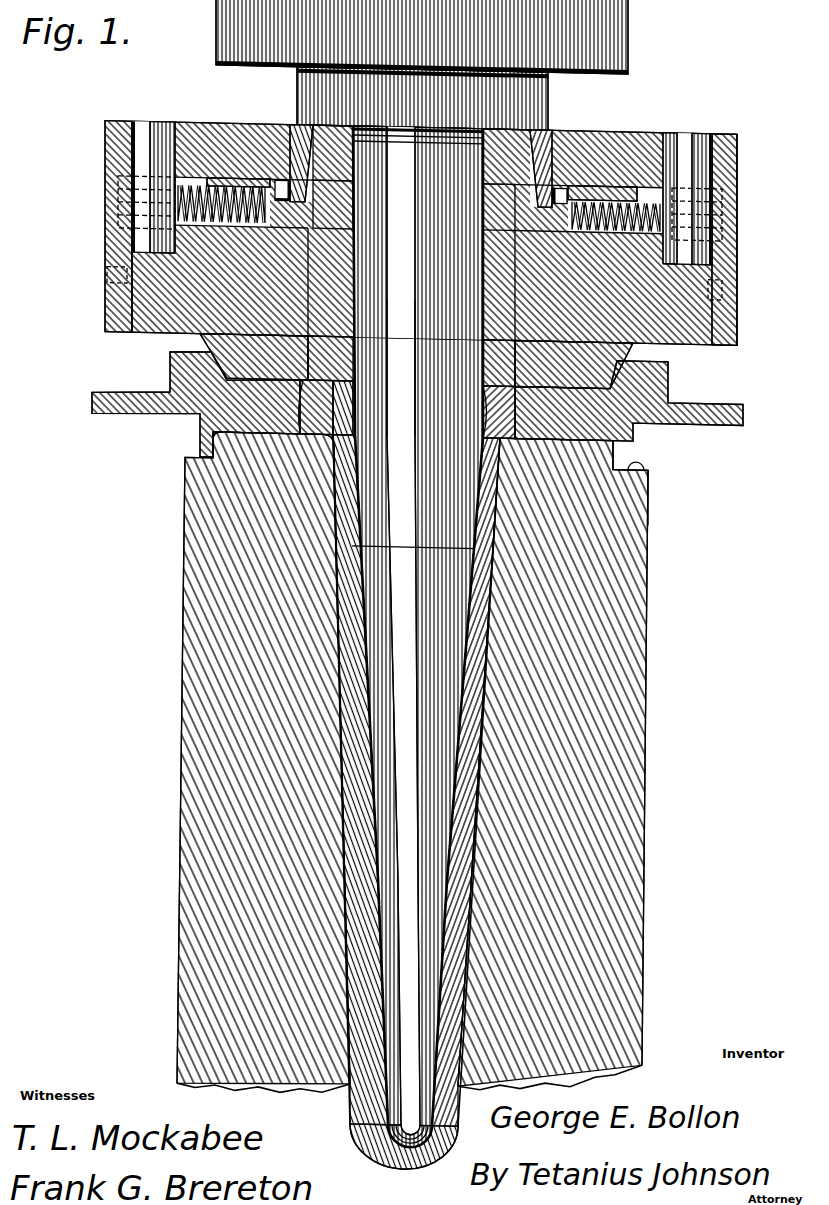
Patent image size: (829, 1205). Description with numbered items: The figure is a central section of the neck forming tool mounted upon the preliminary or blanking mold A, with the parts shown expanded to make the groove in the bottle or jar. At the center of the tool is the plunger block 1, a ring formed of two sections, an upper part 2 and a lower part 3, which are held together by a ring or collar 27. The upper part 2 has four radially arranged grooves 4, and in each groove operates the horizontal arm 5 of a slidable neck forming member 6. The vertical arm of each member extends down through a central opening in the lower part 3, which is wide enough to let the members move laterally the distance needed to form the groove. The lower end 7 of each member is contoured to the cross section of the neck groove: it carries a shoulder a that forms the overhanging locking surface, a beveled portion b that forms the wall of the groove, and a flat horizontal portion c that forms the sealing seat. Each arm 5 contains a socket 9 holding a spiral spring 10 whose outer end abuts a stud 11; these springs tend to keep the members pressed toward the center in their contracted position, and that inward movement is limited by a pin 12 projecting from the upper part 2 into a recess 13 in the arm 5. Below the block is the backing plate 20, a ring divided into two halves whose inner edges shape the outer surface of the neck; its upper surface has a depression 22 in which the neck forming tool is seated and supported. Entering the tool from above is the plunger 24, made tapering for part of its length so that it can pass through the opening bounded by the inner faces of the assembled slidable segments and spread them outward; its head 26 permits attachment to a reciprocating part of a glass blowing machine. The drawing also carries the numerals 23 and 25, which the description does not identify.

The plunger block 1 is at (397, 233).
The upper part 2 is at (718, 155).
The lower part 3 is at (720, 290).
The radially arranged grooves 4 is at (605, 181).
The arm 5 is at (337, 201).
The slidable neck forming member 6 is at (338, 279).
The lower end 7 is at (303, 390).
The socket 9 is at (233, 184).
The spiral spring 10 is at (195, 184).
The stud 11 is at (147, 155).
The pin 12 is at (308, 149).
The recess 13 is at (284, 200).
The backing plate 20 is at (648, 463).
The depression 22 is at (615, 372).
The collar ring 23 is at (602, 344).
The plunger 24 is at (413, 424).
The tube 25 is at (417, 824).
The head 26 is at (628, 67).
The ring or collar 27 is at (735, 201).
The preliminary mold A is at (633, 760).
The shoulder a is at (317, 397).
The beveled portion b is at (503, 431).
The flat horizontal portion c is at (343, 423).